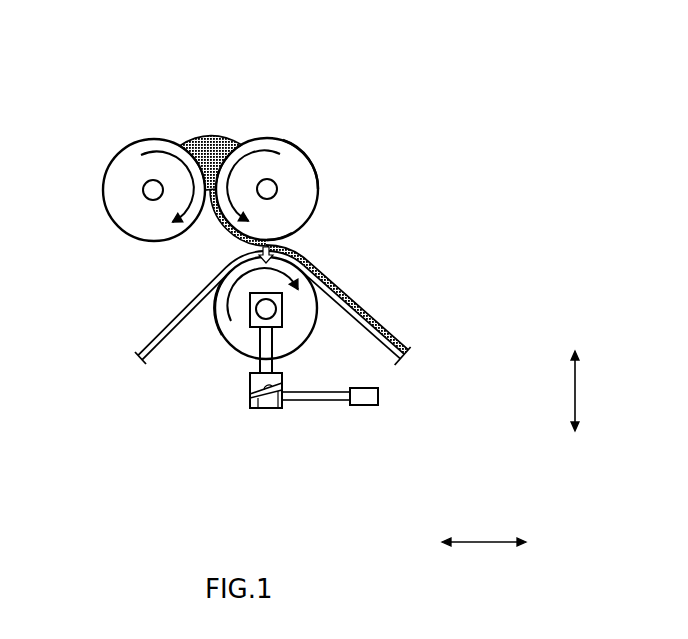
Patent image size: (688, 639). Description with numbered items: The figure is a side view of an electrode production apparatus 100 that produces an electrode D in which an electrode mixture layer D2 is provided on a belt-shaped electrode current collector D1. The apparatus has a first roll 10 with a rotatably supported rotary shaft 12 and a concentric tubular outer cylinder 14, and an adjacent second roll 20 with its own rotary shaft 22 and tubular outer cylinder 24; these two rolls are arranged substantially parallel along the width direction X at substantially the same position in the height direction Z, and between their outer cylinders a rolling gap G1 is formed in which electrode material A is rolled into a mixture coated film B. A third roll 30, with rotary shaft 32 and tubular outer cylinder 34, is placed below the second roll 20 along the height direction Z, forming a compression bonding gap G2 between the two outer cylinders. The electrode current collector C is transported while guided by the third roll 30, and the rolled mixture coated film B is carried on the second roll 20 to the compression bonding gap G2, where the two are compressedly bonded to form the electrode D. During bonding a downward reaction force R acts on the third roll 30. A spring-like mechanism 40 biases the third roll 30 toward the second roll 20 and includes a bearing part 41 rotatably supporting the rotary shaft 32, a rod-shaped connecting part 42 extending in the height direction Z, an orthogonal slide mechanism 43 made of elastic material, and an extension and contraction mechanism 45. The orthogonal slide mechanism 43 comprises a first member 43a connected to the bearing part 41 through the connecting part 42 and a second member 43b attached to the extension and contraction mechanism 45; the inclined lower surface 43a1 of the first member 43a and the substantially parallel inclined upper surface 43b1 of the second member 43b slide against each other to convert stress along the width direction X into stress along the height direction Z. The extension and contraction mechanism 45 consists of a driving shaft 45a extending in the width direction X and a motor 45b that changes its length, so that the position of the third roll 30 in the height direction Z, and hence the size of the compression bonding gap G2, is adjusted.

The electrode production apparatus 100 is at (78, 38).
The first roll 10 is at (123, 177).
The rotary shaft 12 is at (148, 188).
The tubular outer cylinder 14 is at (137, 143).
The second roll 20 is at (299, 158).
The rotary shaft 22 is at (277, 189).
The tubular outer cylinder 24 is at (306, 158).
The third roll 30 is at (222, 308).
The rotary shaft 32 is at (279, 308).
The tubular outer cylinder 34 is at (214, 311).
The spring-like mechanism 40 is at (277, 409).
The bearing part 41 is at (302, 339).
The connecting part 42 is at (258, 342).
The orthogonal slide mechanism 43 is at (229, 423).
The first member 43a is at (250, 387).
The second member 43b is at (250, 400).
The lower surface 43a1 is at (262, 408).
The upper surface 43b1 is at (277, 408).
The extension and contraction mechanism 45 is at (357, 456).
The driving shaft 45a is at (334, 401).
The motor 45b is at (370, 406).
The electrode material A is at (207, 134).
The mixture coated film B is at (291, 231).
The electrode current collector C is at (130, 352).
The electrode D is at (363, 305).
The electrode current collector D1 is at (377, 320).
The electrode mixture layer D2 is at (393, 345).
The rolling gap G1 is at (205, 228).
The compression bonding gap G2 is at (305, 241).
The reaction force R is at (288, 254).
The width direction X is at (484, 557).
The height direction Z is at (586, 391).